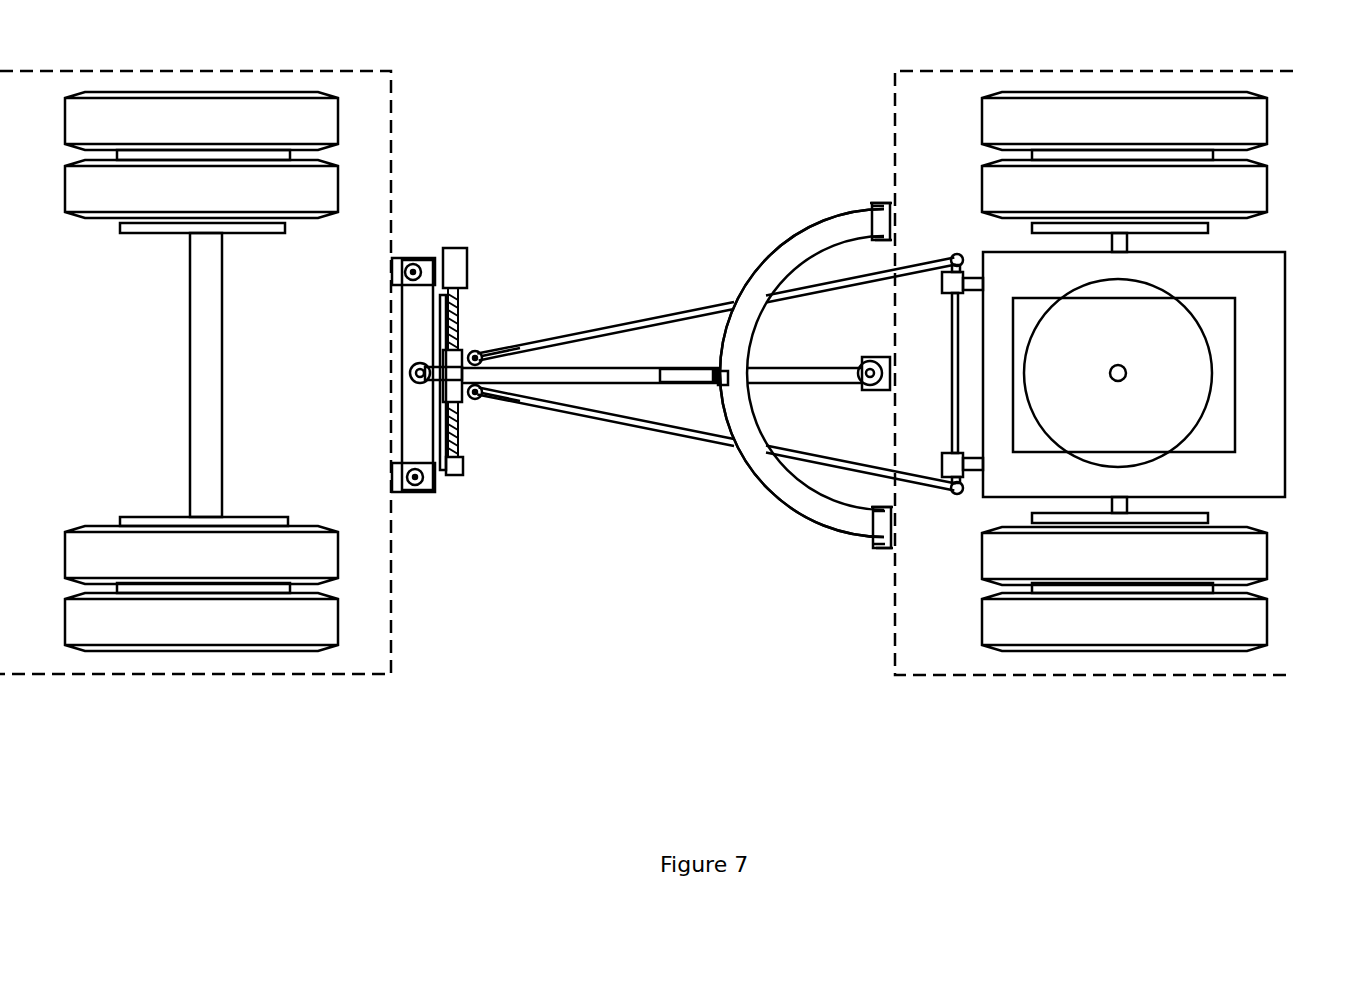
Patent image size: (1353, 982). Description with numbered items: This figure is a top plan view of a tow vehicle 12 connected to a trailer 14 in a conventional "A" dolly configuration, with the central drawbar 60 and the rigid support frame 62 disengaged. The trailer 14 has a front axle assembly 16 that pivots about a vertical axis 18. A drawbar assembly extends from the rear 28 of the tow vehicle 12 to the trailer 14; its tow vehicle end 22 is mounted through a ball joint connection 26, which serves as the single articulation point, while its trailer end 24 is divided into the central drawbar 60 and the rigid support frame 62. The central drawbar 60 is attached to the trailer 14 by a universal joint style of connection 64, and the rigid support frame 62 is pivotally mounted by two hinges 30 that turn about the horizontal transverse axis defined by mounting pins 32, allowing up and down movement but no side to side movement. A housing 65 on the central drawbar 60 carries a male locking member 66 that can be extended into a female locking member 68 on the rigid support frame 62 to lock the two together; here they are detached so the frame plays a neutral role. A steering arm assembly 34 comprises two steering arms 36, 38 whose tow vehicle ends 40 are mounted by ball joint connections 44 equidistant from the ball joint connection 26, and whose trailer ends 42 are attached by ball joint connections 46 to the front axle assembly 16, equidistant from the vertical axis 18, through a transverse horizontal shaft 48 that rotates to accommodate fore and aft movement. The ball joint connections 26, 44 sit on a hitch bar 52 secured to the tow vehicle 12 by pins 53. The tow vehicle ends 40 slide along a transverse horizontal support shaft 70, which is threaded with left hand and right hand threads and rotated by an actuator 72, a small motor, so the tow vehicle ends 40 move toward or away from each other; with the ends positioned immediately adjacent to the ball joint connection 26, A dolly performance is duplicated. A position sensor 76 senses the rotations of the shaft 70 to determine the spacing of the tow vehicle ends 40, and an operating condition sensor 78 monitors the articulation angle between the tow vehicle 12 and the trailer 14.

The tow vehicle 12 is at (50, 657).
The trailer 14 is at (963, 662).
The front axle assembly 16 is at (1118, 245).
The vertical axis 18 is at (1124, 370).
The tow vehicle end 22 is at (465, 398).
The trailer end 24 is at (852, 228).
The ball joint connection 26 is at (409, 366).
The rear 28 is at (390, 597).
The hinges 30 is at (880, 222).
The mounting pins 32 is at (880, 215).
The steering arm assembly 34 is at (632, 296).
The steering arm 36 is at (612, 330).
The steering arm 38 is at (600, 418).
The tow vehicle ends 40 is at (515, 353).
The trailer ends 42 is at (945, 267).
The ball joint connections 44 is at (478, 356).
The ball joint connections 46 is at (956, 255).
The transverse horizontal shaft 48 is at (951, 350).
The hitch bar 52 is at (425, 437).
The pins 53 is at (413, 266).
The central drawbar 60 is at (643, 362).
The rigid support frame 62 is at (735, 356).
The universal joint style of connection 64 is at (864, 380).
The housing 65 is at (672, 378).
The male locking member 66 is at (714, 378).
The female locking member 68 is at (722, 385).
The transverse horizontal support shaft 70 is at (455, 312).
The actuator 72 is at (456, 262).
The position sensor 76 is at (460, 480).
The operating condition sensor 78 is at (410, 376).